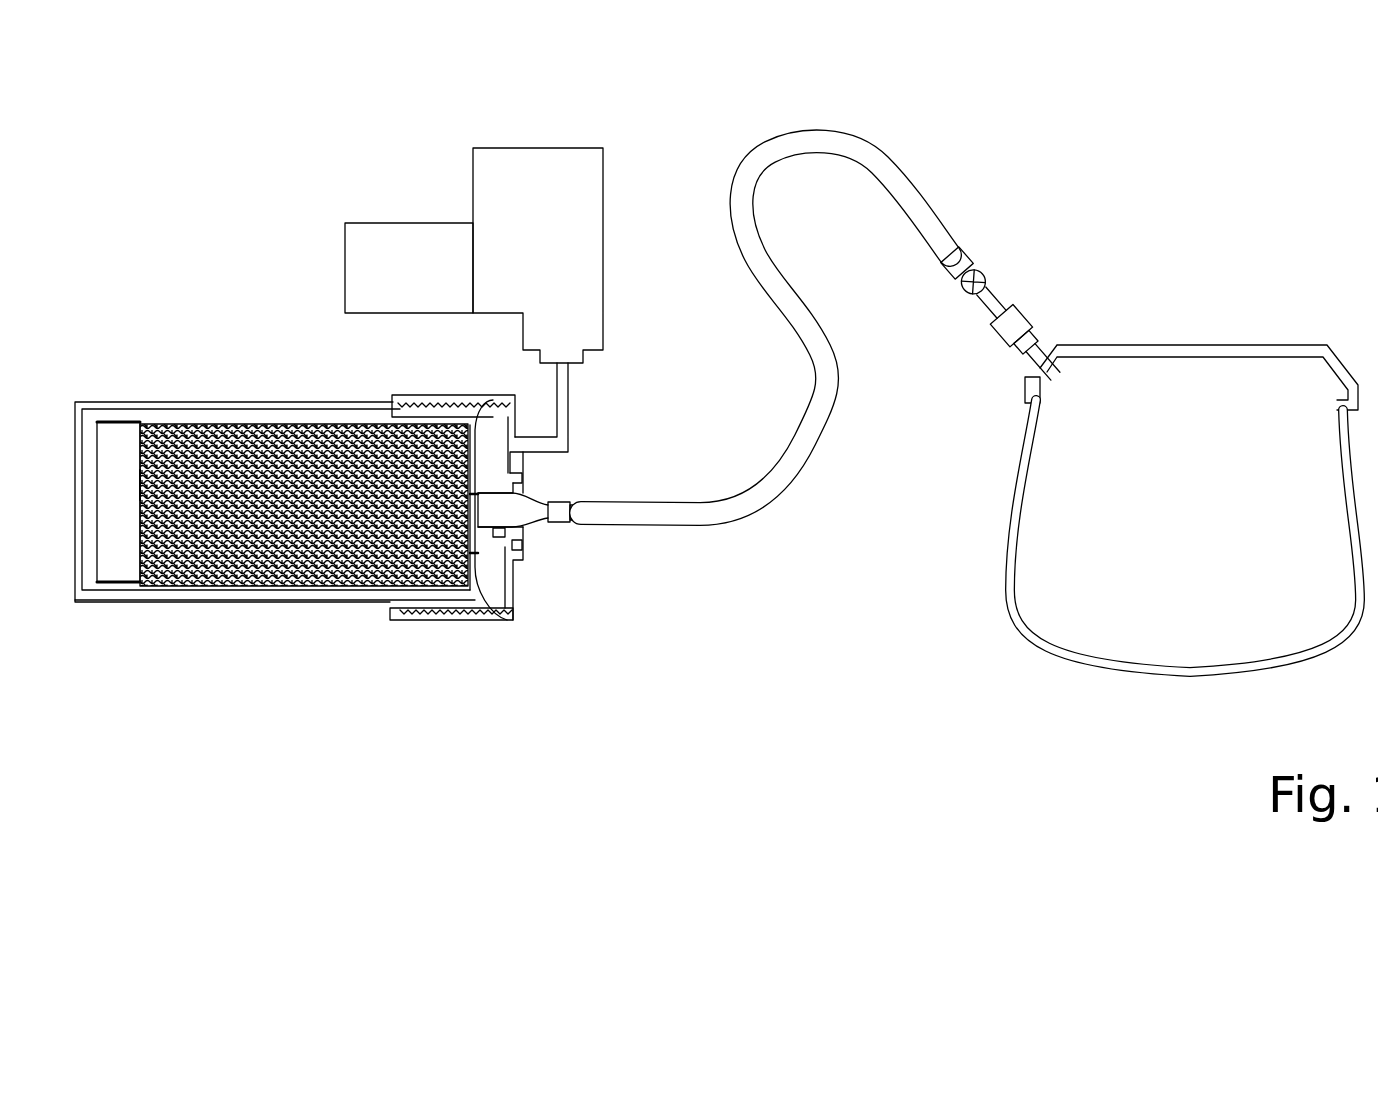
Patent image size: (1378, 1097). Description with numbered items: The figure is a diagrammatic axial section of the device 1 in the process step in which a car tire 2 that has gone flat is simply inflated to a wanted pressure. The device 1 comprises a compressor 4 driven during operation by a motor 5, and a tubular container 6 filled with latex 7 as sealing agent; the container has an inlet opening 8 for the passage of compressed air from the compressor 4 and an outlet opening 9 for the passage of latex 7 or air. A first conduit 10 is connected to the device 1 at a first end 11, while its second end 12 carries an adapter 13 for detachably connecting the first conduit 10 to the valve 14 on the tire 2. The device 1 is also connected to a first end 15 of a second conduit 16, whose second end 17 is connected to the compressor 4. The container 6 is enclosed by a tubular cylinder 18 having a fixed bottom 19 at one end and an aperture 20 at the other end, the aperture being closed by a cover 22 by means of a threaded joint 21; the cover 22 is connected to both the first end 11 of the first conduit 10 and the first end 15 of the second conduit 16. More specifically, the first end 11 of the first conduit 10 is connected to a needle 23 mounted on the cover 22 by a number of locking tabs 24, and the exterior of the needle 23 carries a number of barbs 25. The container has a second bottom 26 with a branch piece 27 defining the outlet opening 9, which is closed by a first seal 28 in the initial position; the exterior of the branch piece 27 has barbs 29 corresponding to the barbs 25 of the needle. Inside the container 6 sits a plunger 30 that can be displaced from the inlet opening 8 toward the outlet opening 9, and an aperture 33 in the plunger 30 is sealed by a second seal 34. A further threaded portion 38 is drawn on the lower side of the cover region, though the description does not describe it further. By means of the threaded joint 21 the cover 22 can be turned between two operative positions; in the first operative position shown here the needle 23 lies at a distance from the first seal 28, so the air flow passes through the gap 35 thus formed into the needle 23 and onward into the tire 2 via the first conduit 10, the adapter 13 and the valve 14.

The device 1 is at (255, 289).
The car tire 2 is at (1015, 640).
The compressor 4 is at (577, 252).
The motor 5 is at (427, 272).
The tubular container 6 is at (262, 586).
The latex 7 is at (304, 505).
The inlet opening 8 is at (104, 503).
The outlet opening 9 is at (508, 588).
The first conduit 10 is at (800, 455).
The first end 11 is at (567, 502).
The second end 12 is at (933, 267).
The adapter 13 is at (990, 300).
The valve 14 is at (1033, 367).
The first end 15 is at (522, 440).
The second conduit 16 is at (566, 422).
The second end 17 is at (572, 371).
The tubular cylinder 18 is at (252, 407).
The fixed bottom 19 is at (76, 525).
The aperture 20 is at (478, 572).
The threaded joint 21 is at (448, 395).
The cover 22 is at (520, 608).
The needle 23 is at (498, 510).
The locking tabs 24 is at (527, 477).
The barbs 25 is at (517, 553).
The second bottom 26 is at (470, 553).
The branch piece 27 is at (484, 486).
The first seal 28 is at (471, 499).
The barbs 29 is at (478, 432).
The plunger 30 is at (138, 586).
The aperture 33 is at (122, 490).
The second seal 34 is at (142, 488).
The gap 35 is at (522, 555).
The thread 38 is at (388, 615).